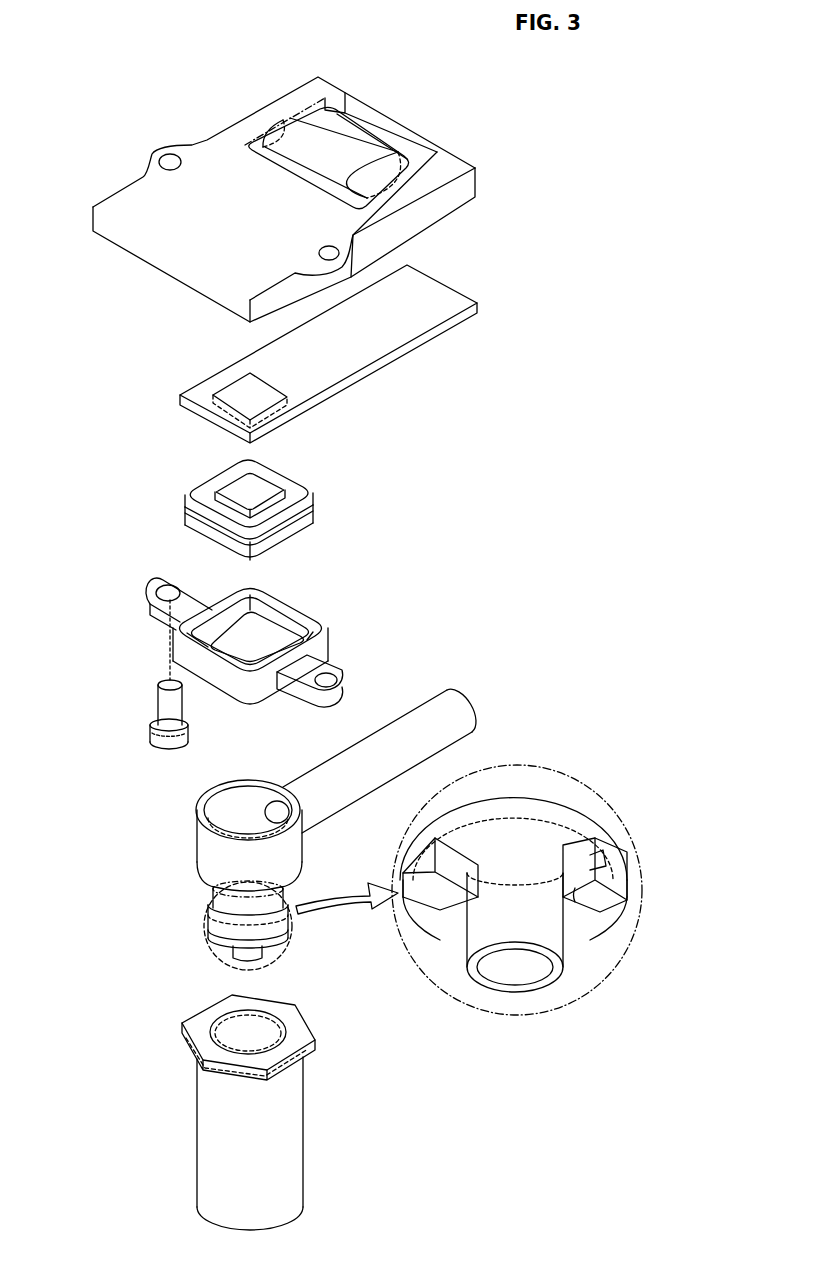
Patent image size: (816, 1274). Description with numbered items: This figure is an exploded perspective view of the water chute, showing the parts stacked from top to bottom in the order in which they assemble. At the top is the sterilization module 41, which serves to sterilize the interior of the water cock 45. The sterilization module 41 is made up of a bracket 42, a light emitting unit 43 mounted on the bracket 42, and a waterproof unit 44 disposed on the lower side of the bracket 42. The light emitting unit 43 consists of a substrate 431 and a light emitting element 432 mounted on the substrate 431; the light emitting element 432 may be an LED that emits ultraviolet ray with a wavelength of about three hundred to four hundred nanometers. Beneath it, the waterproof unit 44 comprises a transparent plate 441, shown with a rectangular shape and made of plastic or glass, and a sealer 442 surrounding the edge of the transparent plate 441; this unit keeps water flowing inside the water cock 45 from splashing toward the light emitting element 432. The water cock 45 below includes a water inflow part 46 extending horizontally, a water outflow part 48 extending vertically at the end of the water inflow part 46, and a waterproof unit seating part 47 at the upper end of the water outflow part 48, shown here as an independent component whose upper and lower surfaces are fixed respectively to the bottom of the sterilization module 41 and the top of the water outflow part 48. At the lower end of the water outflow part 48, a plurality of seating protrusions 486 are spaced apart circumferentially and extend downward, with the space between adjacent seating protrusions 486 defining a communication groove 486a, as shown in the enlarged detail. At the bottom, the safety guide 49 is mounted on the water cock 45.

The sterilization module 41 is at (75, 373).
The bracket 42 is at (210, 257).
The light emitting unit 43 is at (106, 412).
The substrate 431 is at (180, 397).
The light emitting element 432 is at (220, 430).
The waterproof unit 44 is at (106, 485).
The transparent plate 441 is at (247, 497).
The sealer 442 is at (217, 542).
The water cock 45 is at (110, 795).
The water inflow part 46 is at (343, 750).
The waterproof unit seating part 47 is at (220, 683).
The water outflow part 48 is at (220, 853).
The seating protrusions 486 is at (590, 862).
The communication groove 486a is at (565, 893).
The safety guide 49 is at (300, 1177).